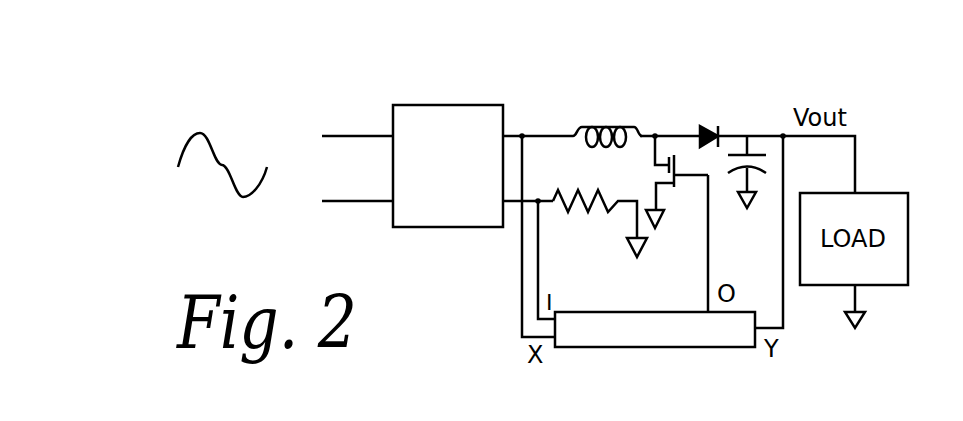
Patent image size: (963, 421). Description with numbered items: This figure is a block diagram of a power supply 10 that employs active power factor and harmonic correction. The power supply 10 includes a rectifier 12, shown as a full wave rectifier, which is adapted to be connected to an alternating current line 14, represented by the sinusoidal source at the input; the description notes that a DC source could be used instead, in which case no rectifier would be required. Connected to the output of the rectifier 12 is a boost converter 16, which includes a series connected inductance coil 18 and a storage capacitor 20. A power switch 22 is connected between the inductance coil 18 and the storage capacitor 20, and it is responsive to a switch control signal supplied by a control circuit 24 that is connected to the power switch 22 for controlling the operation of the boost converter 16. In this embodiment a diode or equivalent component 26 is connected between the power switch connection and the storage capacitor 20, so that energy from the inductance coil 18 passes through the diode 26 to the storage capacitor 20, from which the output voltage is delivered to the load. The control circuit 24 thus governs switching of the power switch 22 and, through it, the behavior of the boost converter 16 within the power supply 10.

The power supply 10 is at (381, 86).
The rectifier 12 is at (463, 104).
The alternating current line 14 is at (347, 163).
The boost converter 16 is at (565, 111).
The inductance coil 18 is at (617, 127).
The storage capacitor 20 is at (757, 172).
The power switch 22 is at (675, 186).
The control circuit 24 is at (703, 348).
The diode 26 is at (712, 128).